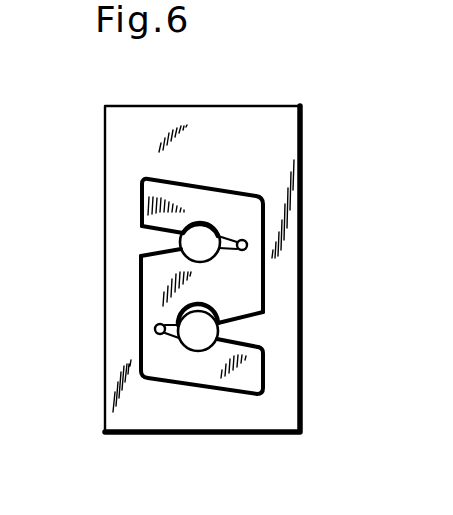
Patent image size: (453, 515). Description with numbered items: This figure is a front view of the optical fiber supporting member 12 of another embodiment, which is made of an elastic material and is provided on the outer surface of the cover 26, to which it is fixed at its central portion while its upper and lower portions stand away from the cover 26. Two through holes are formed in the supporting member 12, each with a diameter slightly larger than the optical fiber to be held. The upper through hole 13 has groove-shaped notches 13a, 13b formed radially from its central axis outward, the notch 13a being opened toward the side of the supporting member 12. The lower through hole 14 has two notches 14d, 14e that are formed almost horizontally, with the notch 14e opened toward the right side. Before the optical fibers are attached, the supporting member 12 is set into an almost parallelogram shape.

The optical fiber supporting member 12 is at (248, 273).
The through hole 13 is at (200, 235).
The notch 13a is at (155, 241).
The notch 13b is at (247, 245).
The through hole 14 is at (198, 340).
The notch 14d is at (155, 329).
The notch 14e is at (238, 332).
The cover 26 is at (272, 106).